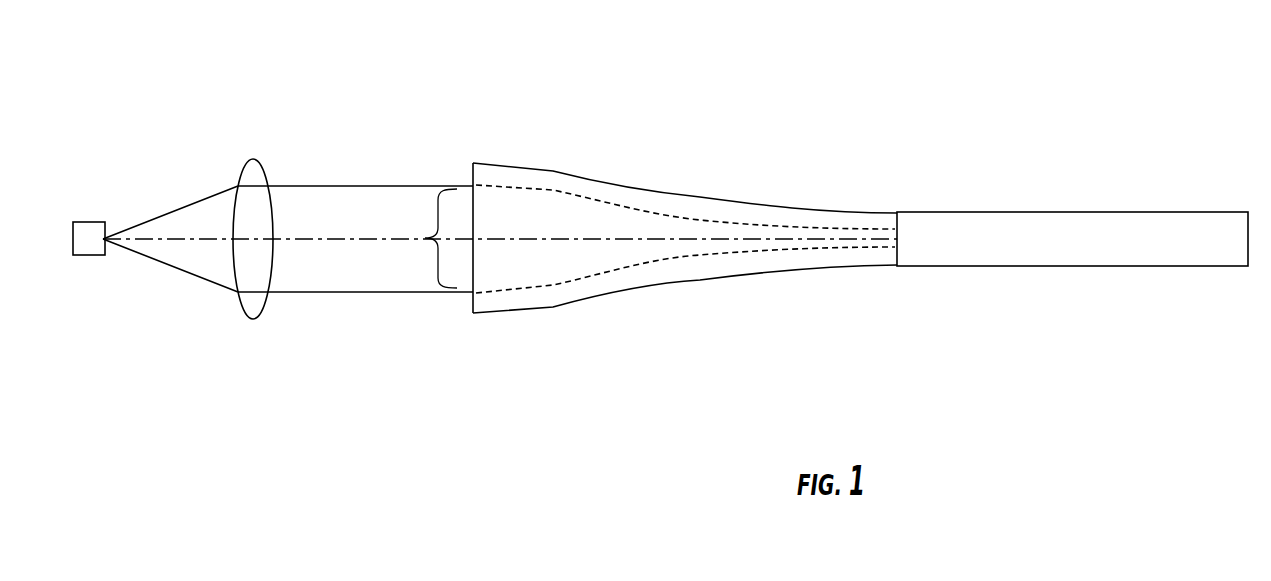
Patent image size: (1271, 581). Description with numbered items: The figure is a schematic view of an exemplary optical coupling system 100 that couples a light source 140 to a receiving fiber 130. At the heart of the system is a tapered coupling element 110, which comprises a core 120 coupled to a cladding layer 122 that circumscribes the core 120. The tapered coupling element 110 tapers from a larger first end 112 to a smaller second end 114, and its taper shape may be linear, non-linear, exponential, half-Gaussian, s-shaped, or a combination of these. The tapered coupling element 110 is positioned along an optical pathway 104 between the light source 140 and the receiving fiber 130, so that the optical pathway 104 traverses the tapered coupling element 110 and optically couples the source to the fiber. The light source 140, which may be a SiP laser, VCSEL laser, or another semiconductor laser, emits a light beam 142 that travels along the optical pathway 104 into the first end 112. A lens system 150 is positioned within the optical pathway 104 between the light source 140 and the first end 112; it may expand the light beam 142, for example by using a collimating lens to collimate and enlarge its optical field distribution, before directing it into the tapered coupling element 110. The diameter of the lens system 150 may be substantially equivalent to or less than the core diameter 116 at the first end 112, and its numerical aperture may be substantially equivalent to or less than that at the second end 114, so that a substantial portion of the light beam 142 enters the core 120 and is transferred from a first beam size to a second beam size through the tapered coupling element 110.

The optical coupling system 100 is at (758, 143).
The optical pathway 104 is at (593, 240).
The tapered coupling element 110 is at (588, 135).
The first end 112 is at (492, 158).
The second end 114 is at (888, 198).
The core diameter 116 is at (438, 270).
The core 120 is at (548, 265).
The cladding layer 122 is at (520, 299).
The receiving fiber 130 is at (1058, 266).
The light source 140 is at (97, 222).
The light beam 142 is at (363, 304).
The lens system 150 is at (240, 335).